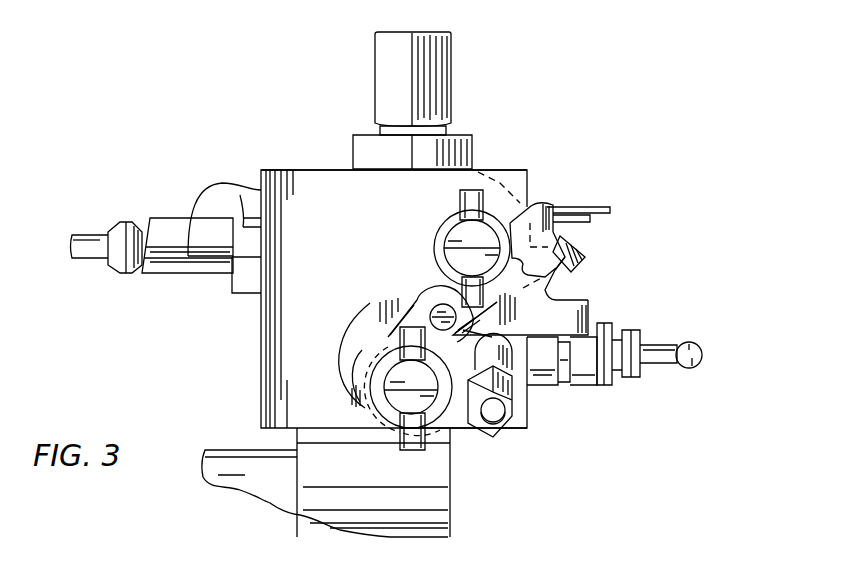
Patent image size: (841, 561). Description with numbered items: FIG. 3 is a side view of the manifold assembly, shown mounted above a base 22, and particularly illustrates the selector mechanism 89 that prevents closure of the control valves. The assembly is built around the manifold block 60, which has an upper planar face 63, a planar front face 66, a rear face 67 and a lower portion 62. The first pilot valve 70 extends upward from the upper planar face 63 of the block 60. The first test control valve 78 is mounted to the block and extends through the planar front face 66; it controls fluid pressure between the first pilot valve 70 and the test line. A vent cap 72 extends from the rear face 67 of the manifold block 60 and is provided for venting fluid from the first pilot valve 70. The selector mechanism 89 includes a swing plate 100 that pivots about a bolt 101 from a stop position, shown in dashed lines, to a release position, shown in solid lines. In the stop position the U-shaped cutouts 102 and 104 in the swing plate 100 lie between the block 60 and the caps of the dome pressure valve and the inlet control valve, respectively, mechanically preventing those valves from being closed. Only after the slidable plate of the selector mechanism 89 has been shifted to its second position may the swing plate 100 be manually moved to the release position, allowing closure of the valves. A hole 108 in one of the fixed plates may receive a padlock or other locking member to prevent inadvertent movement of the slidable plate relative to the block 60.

The mounting base 22 is at (442, 500).
The manifold block 60 is at (338, 215).
The bottom surface of valve body 62 is at (462, 430).
The upper planar face 63 is at (302, 170).
The planar front face 66 is at (527, 180).
The rear face 67 is at (260, 345).
The first pilot valve 70 is at (448, 68).
The vent cap 72 is at (218, 195).
The first test control valve 78 is at (585, 378).
The selector mechanism 89 is at (612, 305).
The swing plate 100 is at (373, 318).
The bolt 101 is at (438, 308).
The U-shaped cutout 102 is at (557, 273).
The U-shaped cutout 104 is at (358, 360).
The hole 108 is at (505, 427).